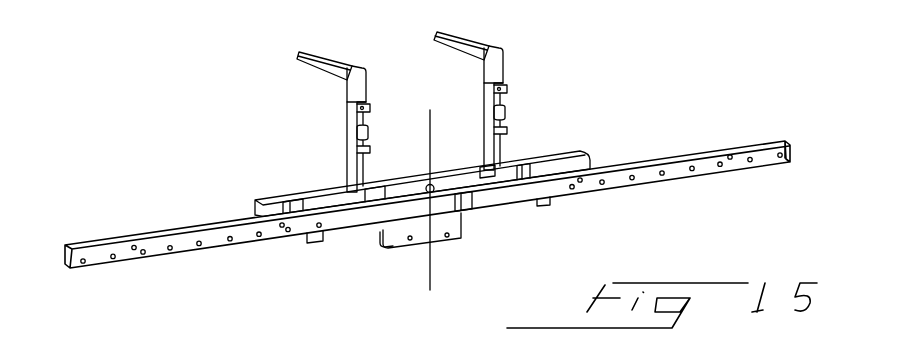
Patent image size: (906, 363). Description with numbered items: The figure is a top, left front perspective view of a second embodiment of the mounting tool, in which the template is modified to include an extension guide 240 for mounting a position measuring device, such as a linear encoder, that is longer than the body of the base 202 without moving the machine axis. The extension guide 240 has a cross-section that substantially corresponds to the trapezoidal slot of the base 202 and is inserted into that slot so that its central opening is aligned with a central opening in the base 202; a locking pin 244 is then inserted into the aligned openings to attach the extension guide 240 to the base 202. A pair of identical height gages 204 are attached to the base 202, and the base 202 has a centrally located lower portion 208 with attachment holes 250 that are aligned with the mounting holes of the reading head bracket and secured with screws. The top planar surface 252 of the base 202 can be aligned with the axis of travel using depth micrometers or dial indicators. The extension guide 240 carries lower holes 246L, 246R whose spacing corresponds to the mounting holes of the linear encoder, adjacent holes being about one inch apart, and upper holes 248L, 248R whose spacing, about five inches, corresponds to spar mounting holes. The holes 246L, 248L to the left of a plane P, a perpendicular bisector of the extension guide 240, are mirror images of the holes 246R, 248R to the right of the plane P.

The extension guide 240 is at (121, 265).
The base 202 is at (543, 152).
The height gages 204 is at (347, 127).
The locking pin 244 is at (428, 184).
The top planar surface 252 is at (473, 137).
The upper holes 248L is at (283, 223).
The upper holes 248R is at (580, 177).
The lower holes 246L is at (110, 265).
The lower holes 246R is at (781, 158).
The lower portion 208 is at (461, 220).
The attachment holes 250 is at (447, 247).
The plane P is at (428, 287).